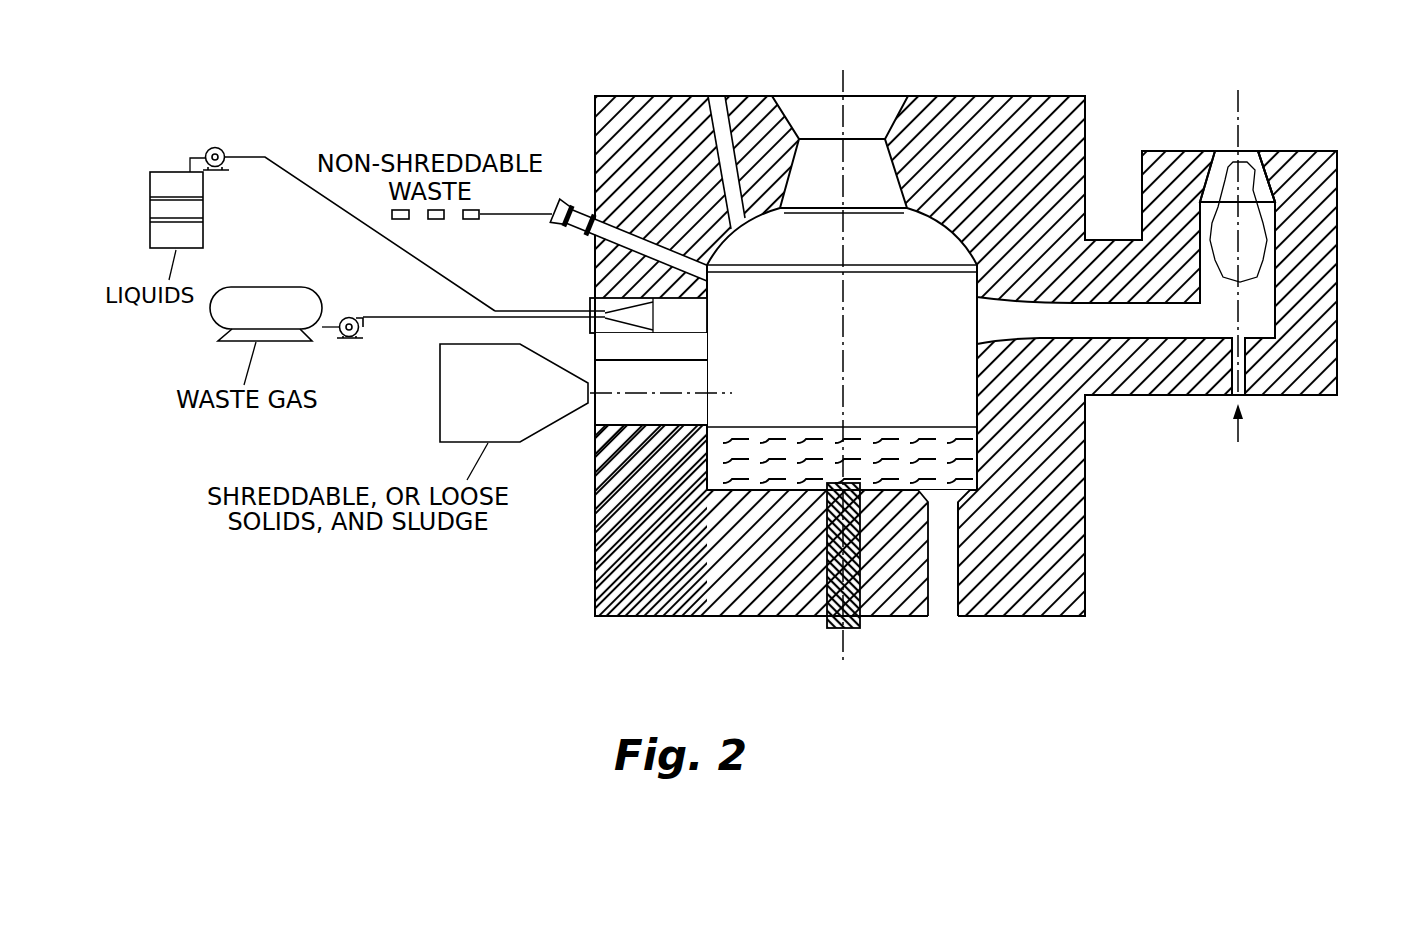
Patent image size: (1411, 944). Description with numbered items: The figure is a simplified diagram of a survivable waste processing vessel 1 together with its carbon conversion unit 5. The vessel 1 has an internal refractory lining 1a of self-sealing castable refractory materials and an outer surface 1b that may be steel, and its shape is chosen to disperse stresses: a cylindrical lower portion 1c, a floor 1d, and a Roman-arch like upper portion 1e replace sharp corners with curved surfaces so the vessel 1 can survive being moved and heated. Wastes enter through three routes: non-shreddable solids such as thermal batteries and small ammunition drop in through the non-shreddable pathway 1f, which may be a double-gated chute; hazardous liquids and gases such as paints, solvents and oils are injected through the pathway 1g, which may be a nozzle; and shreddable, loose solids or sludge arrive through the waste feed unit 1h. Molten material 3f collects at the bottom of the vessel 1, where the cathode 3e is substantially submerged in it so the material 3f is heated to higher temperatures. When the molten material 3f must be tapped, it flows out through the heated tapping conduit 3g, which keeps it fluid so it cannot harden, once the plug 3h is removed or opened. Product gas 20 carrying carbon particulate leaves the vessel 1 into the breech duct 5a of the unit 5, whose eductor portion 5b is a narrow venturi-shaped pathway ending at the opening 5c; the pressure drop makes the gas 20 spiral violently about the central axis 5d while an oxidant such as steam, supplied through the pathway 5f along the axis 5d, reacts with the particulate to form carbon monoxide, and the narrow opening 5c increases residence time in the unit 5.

The survivable waste processing vessel 1 is at (978, 398).
The internal refractory lining 1a is at (627, 527).
The outer surface 1b is at (652, 96).
The cylindrical lower portion 1c is at (963, 288).
The floor 1d is at (787, 492).
The Roman-arch like upper portion 1e is at (932, 227).
The non-shreddable pathway 1f is at (582, 212).
The pathway 1g is at (588, 297).
The waste feed unit 1h is at (440, 397).
The cathode 3e is at (842, 630).
The molten material 3f is at (735, 482).
The heated tapping conduit 3g is at (960, 565).
The plug 3h is at (952, 618).
The carbon conversion unit 5 is at (1340, 312).
The breech duct 5a is at (1190, 320).
The eductor portion 5b is at (1270, 167).
The opening 5c is at (1228, 152).
The central axis 5d is at (1240, 117).
The pathway 5f is at (1247, 373).
The product gas 20 is at (1270, 233).